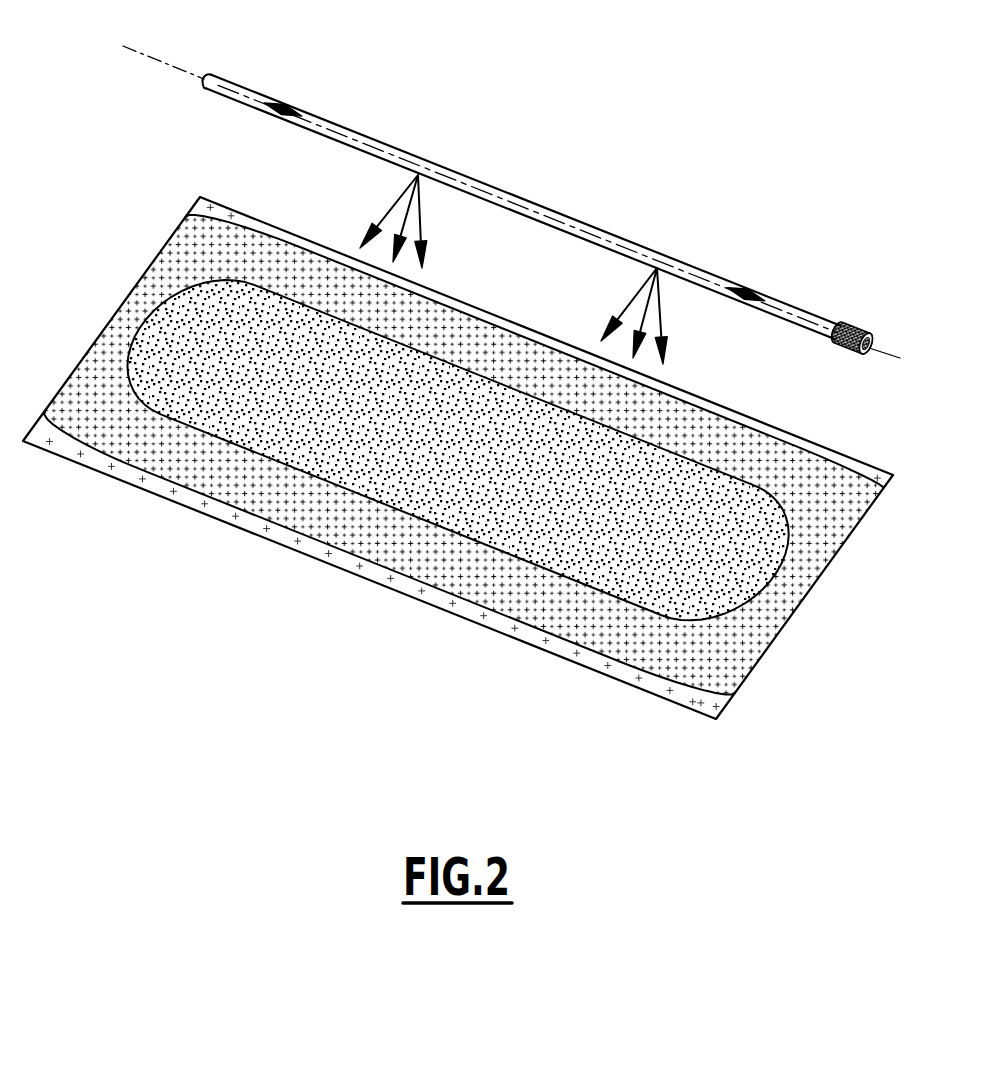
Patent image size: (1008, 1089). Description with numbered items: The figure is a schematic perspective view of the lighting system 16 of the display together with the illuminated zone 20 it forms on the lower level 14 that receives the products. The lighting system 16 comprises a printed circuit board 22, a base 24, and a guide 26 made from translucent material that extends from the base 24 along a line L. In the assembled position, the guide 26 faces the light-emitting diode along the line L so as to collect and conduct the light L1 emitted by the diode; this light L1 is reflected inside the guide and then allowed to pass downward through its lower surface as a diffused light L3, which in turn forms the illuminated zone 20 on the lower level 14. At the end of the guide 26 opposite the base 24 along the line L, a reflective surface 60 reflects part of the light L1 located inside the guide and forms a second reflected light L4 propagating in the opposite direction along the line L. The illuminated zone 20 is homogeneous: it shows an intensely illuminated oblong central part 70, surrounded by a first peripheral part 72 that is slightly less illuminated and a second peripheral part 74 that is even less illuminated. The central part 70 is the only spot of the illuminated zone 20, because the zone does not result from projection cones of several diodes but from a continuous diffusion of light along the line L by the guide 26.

The lower level 14 is at (458, 458).
The lighting system 16 is at (511, 221).
The illuminated zone 20 is at (458, 458).
The printed circuit board 22 is at (875, 330).
The base 24 is at (850, 327).
The guide 26 is at (440, 168).
The reflective surface 60 is at (205, 78).
The central part 70 is at (265, 428).
The first peripheral part 72 is at (287, 495).
The second peripheral part 74 is at (337, 560).
The line L is at (882, 352).
The light L1 is at (773, 301).
The diffused light L3 is at (662, 310).
The second reflected light L4 is at (258, 99).